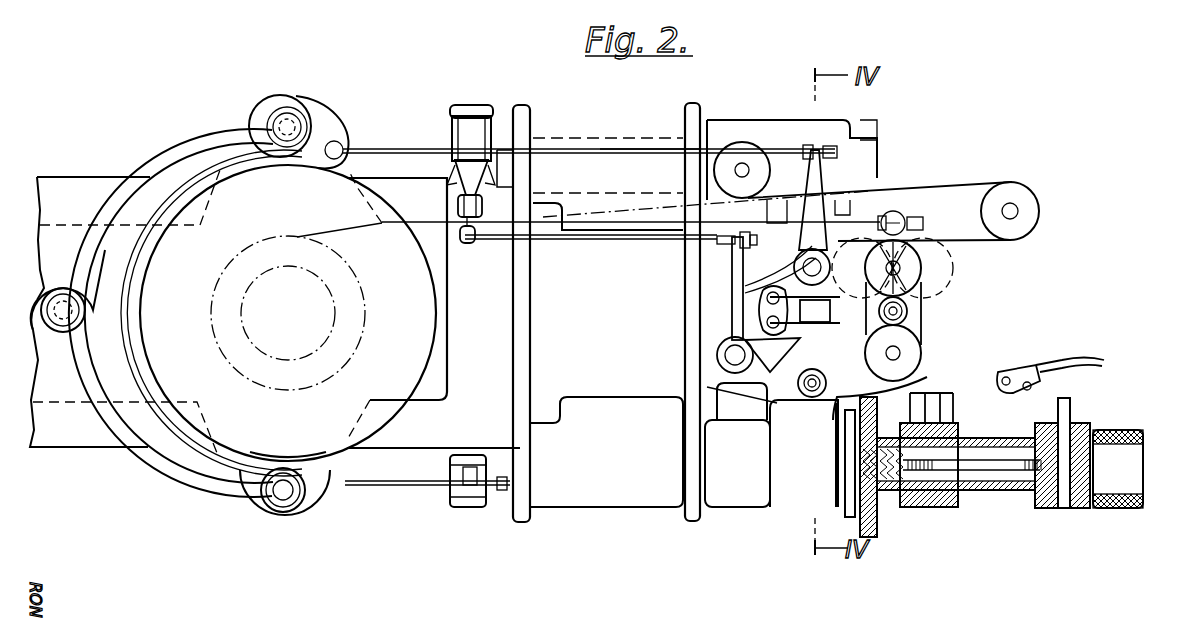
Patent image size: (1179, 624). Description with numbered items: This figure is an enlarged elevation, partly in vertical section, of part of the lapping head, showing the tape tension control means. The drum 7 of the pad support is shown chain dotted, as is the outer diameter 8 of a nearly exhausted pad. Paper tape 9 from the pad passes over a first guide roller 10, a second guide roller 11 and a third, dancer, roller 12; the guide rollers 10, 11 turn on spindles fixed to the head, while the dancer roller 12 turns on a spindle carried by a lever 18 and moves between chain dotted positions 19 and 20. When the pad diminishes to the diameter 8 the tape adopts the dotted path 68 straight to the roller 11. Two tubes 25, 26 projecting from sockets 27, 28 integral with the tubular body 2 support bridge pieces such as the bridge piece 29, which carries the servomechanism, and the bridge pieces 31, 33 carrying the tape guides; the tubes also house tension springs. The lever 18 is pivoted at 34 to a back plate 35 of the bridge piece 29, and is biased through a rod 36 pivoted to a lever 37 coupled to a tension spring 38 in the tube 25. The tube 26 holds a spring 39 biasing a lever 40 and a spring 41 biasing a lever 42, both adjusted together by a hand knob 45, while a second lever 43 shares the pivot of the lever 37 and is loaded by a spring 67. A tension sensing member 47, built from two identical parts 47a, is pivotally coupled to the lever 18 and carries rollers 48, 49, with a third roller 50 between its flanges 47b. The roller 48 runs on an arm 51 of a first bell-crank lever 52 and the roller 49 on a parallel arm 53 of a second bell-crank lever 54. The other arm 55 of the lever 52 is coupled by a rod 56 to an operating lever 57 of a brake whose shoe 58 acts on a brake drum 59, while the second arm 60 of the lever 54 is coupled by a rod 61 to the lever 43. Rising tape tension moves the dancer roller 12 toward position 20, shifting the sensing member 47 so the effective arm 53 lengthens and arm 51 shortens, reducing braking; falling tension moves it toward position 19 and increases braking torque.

The tubular body 2 is at (496, 333).
The drum of the pad support 7 is at (247, 333).
The outer diameter of a nearly exhausted pad 8 is at (211, 292).
The paper tape 9 is at (713, 180).
The first guide roller 10 is at (738, 152).
The second guide roller 11 is at (1028, 200).
The dancer roller 12 is at (916, 258).
The lever 18 is at (908, 316).
The chain dotted position 19 is at (903, 232).
The chain dotted position 20 is at (952, 250).
The tube 25 is at (870, 176).
The tube 26 is at (892, 492).
The socket 27 is at (615, 132).
The socket 28 is at (628, 473).
The bridge piece 29 is at (790, 462).
The bridge piece 31 is at (948, 415).
The bridge piece 33 is at (1058, 408).
The pivot 34 is at (900, 353).
The back plate 35 is at (910, 392).
The rod 36 is at (587, 222).
The lever 37 is at (452, 138).
The tension spring 38 is at (512, 148).
The tension spring 39 is at (503, 492).
The lever 40 is at (456, 500).
The tension spring 41 is at (886, 442).
The lever 42 is at (456, 470).
The second lever 43 is at (459, 184).
The hand knob 45 is at (1126, 422).
The tension sensing member 47 is at (831, 337).
The identical part 47a is at (1100, 380).
The flange 47b is at (1035, 370).
The roller 48 is at (762, 296).
The roller 49 is at (760, 318).
The third roller 50 is at (822, 332).
The arm 51 is at (732, 282).
The first bell-crank lever 52 is at (786, 256).
The arm 53 is at (790, 348).
The second bell-crank lever 54 is at (708, 354).
The arm 55 is at (815, 176).
The rod 56 is at (673, 154).
The operating lever 57 is at (190, 155).
The brake shoe 58 is at (135, 372).
The brake drum 59 is at (295, 455).
The second arm 60 is at (730, 260).
The rod 61 is at (620, 240).
The spring 67 is at (474, 243).
The path 68 is at (357, 232).